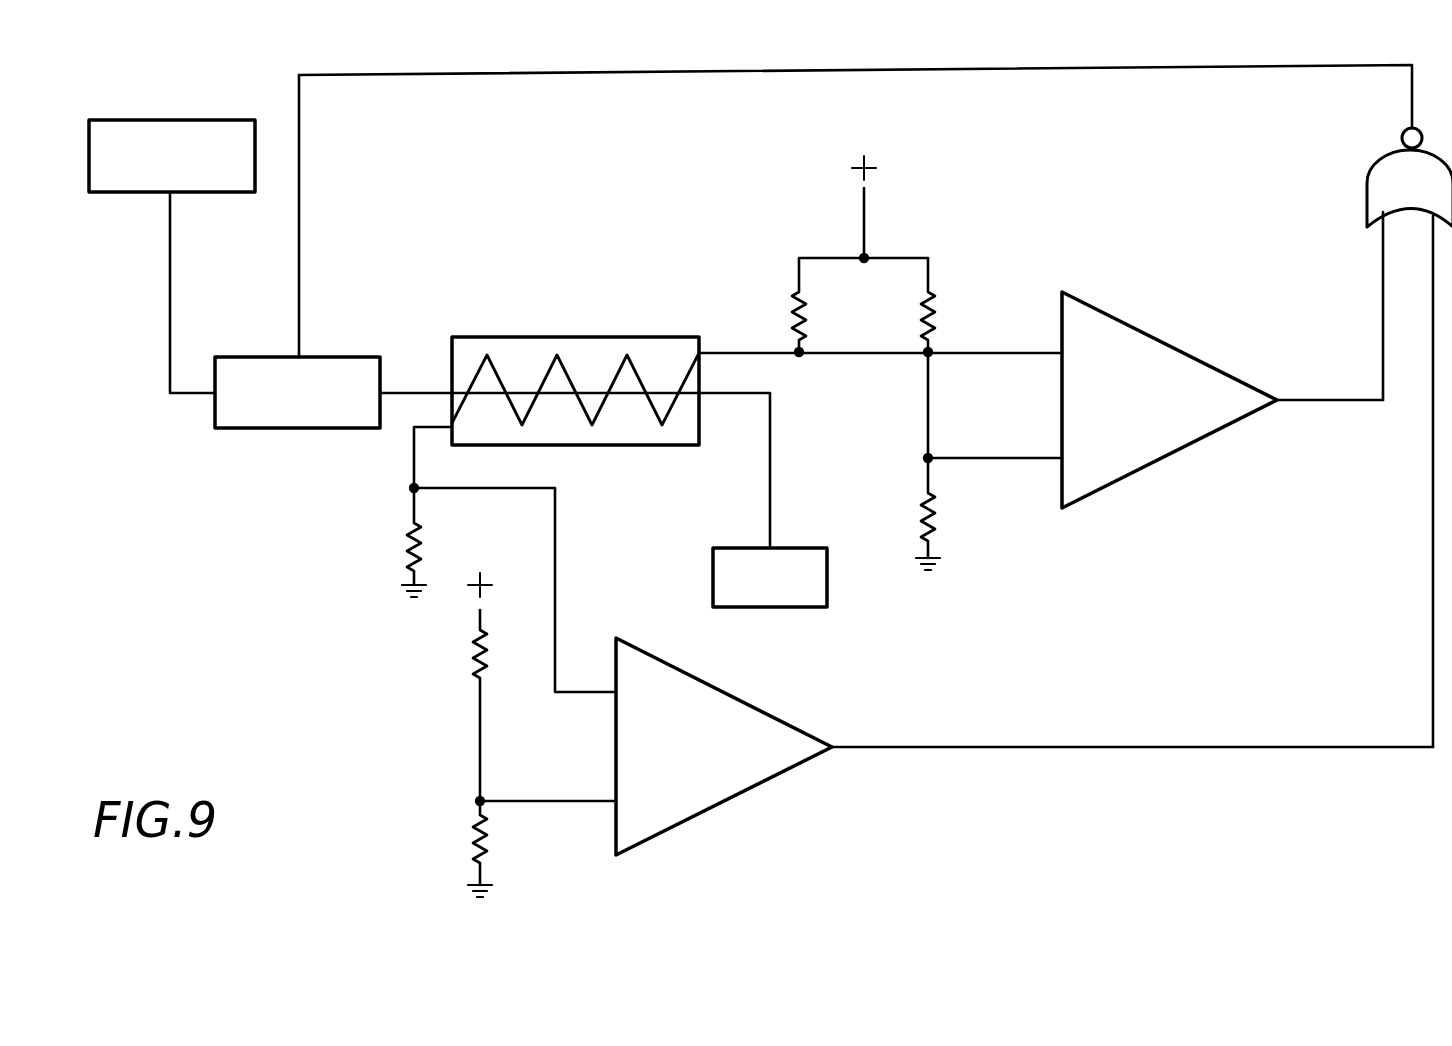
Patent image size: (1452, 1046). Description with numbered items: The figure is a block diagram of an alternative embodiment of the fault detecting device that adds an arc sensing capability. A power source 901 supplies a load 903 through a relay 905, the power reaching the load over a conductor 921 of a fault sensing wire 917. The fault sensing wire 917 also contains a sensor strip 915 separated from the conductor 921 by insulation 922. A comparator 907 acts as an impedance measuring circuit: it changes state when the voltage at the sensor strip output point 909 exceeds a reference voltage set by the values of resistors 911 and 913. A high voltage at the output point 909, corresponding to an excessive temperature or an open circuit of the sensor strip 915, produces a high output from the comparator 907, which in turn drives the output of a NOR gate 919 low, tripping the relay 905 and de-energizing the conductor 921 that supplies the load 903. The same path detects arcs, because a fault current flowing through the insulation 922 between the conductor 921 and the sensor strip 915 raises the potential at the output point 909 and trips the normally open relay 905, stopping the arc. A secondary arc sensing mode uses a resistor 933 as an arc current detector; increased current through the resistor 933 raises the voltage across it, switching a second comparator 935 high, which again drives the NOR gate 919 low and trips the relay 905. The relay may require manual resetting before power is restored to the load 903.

The power source 901 is at (212, 192).
The load 903 is at (793, 607).
The relay 905 is at (267, 428).
The comparator 907 is at (1203, 362).
The sensor strip output point 909 is at (753, 353).
The resistor 911 is at (937, 303).
The resistor 913 is at (937, 508).
The sensor strip 915 is at (568, 373).
The fault sensing wire 917 is at (518, 337).
The NOR gate 919 is at (1373, 168).
The conductor 921 is at (402, 392).
The insulation 922 is at (663, 370).
The resistor 933 is at (405, 542).
The comparator 935 is at (763, 783).